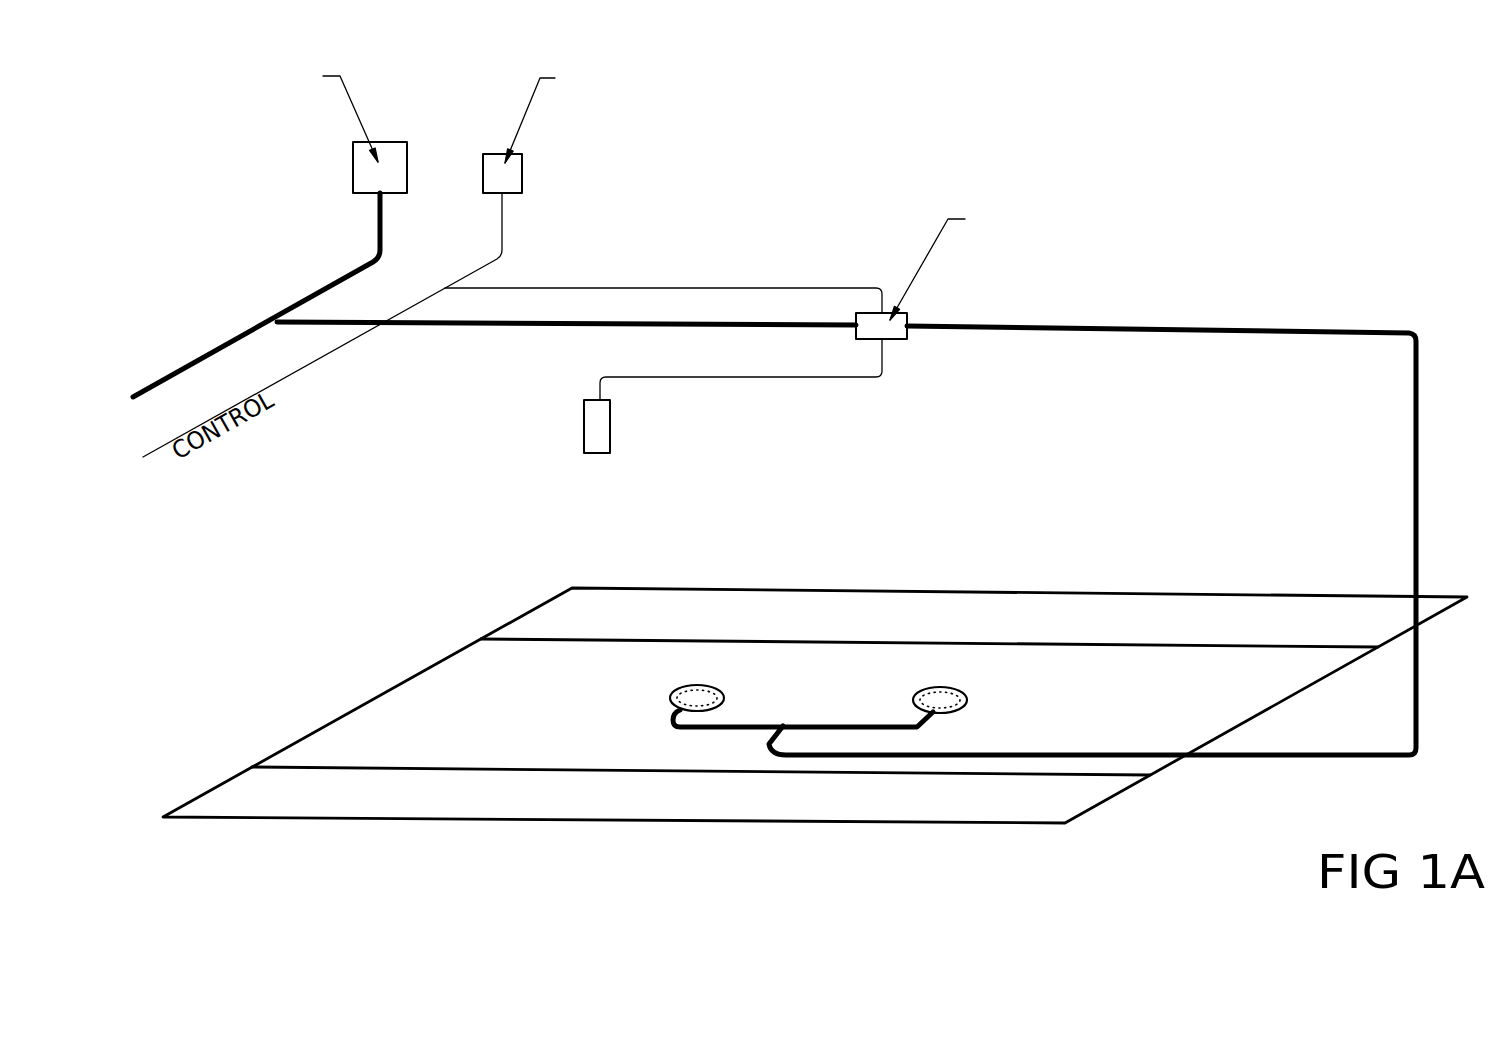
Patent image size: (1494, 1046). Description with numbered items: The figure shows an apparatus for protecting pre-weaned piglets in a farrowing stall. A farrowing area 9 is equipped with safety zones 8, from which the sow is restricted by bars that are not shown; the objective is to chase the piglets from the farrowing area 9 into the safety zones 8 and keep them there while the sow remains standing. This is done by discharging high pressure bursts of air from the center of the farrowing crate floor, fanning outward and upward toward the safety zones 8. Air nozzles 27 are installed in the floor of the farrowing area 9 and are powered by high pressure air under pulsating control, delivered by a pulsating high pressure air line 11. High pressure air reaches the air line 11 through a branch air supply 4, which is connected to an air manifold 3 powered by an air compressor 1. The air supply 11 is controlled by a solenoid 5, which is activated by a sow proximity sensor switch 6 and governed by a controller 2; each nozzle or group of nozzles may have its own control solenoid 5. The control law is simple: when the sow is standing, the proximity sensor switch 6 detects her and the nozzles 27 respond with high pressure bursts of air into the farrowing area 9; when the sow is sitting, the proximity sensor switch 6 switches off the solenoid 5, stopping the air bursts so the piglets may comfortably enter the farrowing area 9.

The air compressor 1 is at (370, 173).
The controller 2 is at (505, 183).
The air manifold 3 is at (342, 275).
The branch air supply 4 is at (514, 327).
The solenoid 5 is at (883, 332).
The sow proximity sensor switch 6 is at (602, 422).
The safety zones 8 is at (933, 618).
The farrowing area 9 is at (478, 698).
The pulsating high pressure air line 11 is at (1188, 326).
The air nozzles 27 is at (695, 685).